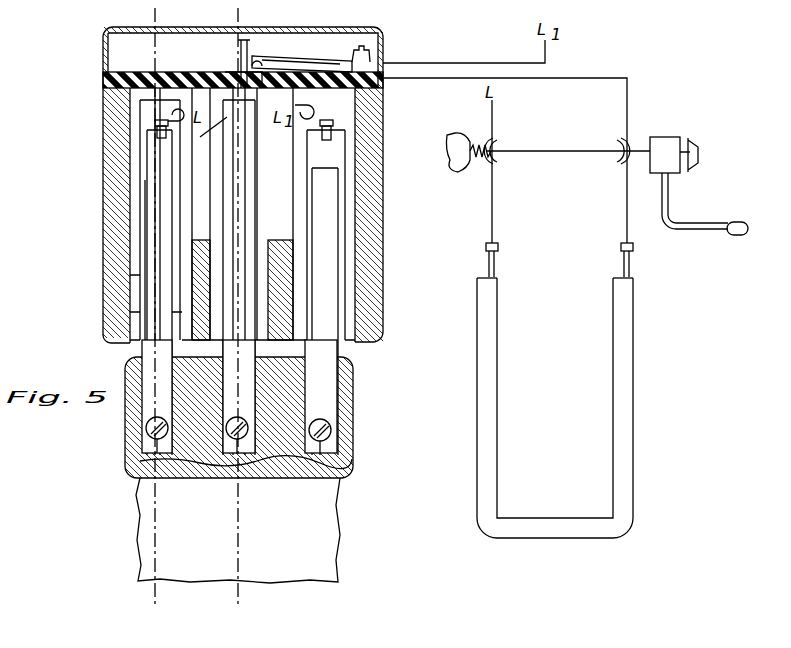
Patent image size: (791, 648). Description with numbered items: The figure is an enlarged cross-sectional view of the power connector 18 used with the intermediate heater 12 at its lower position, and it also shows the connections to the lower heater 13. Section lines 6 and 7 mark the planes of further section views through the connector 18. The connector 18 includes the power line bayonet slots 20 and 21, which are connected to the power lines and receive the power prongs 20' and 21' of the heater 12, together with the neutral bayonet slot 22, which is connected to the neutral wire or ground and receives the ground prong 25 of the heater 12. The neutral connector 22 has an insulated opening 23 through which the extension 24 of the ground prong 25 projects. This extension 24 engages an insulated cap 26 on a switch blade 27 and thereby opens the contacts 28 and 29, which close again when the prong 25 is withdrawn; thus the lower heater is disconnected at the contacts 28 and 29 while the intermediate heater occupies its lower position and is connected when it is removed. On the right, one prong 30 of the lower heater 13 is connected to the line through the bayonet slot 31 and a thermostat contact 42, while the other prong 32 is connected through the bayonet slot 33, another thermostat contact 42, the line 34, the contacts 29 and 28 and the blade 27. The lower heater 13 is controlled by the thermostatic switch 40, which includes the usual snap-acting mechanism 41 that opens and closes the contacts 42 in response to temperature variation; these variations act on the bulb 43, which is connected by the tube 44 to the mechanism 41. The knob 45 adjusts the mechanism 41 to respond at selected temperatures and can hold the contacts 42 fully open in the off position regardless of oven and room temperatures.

The section line 6- 6 is at (218, 600).
The section line 7- 7 is at (140, 600).
The intermediate heater 12 is at (328, 503).
The lower heater 13 is at (498, 403).
The connector 18 is at (375, 110).
The power line bayonet slot 20 is at (363, 235).
The power prong 20' is at (370, 311).
The power line bayonet slot 21 is at (121, 220).
The power prong 21' is at (113, 271).
The neutral bayonet slot 22 is at (225, 118).
The insulated opening 23 is at (210, 72).
The extension 24 is at (245, 66).
The ground prong 25 is at (230, 228).
The insulated cap 26 is at (284, 32).
The switch blade 27 is at (343, 45).
The contact 28 is at (291, 50).
The contact 29 is at (288, 66).
The prong 30 is at (497, 272).
The bayonet slot 31 is at (497, 252).
The prong 32 is at (632, 275).
The bayonet slot 33 is at (633, 254).
The line 34 is at (630, 103).
The thermostatic switch 40 is at (585, 153).
The snap-acting mechanism 41 is at (662, 140).
The thermostat contact 42 is at (497, 146).
The bulb 43 is at (738, 236).
The tube 44 is at (670, 200).
The knob 45 is at (702, 152).